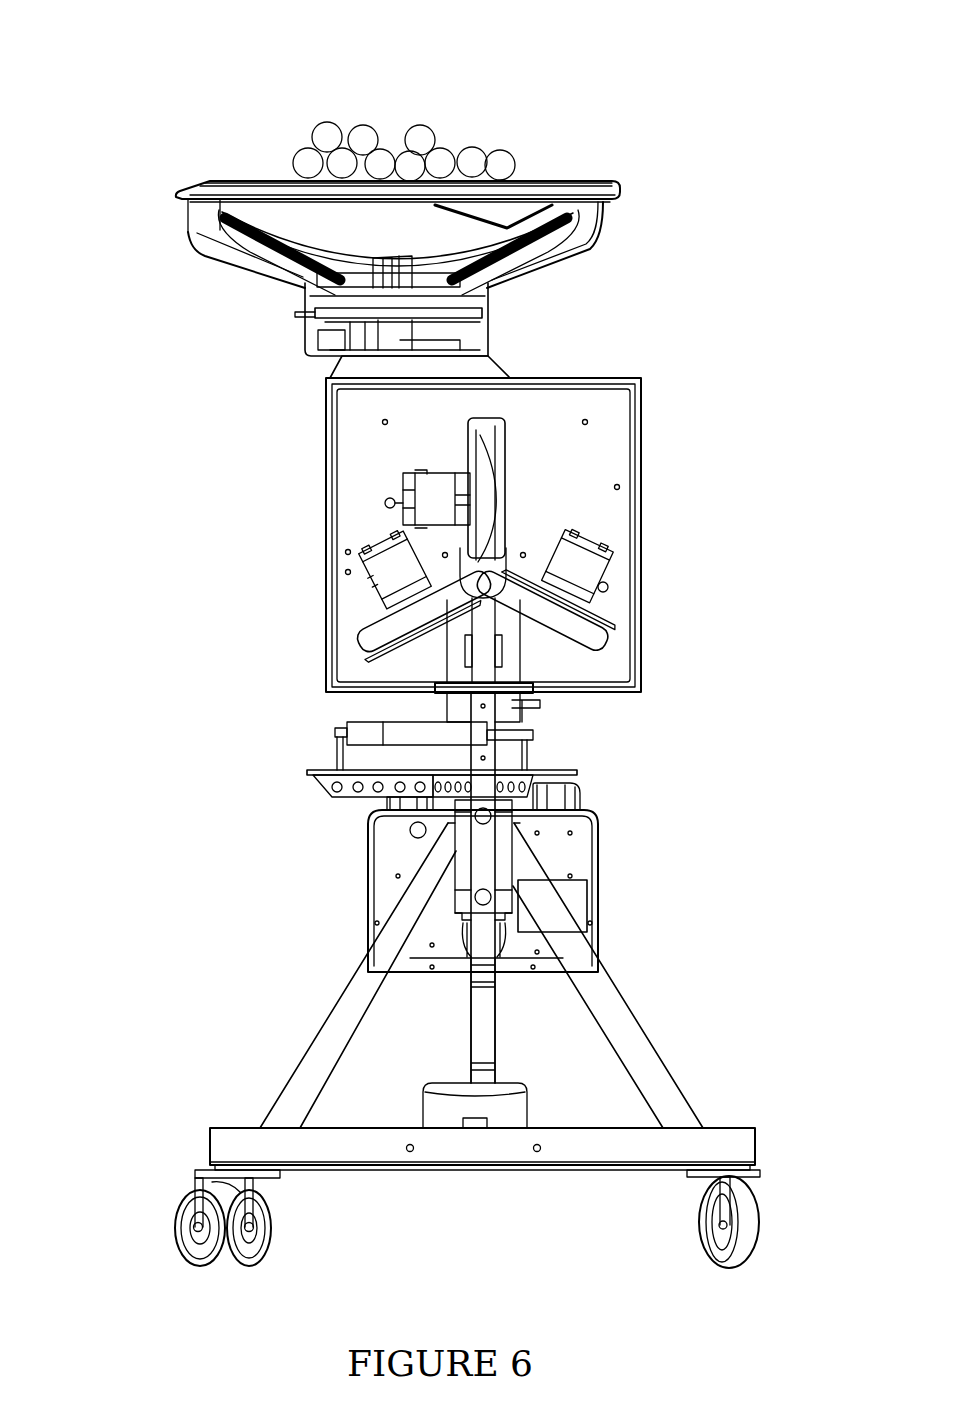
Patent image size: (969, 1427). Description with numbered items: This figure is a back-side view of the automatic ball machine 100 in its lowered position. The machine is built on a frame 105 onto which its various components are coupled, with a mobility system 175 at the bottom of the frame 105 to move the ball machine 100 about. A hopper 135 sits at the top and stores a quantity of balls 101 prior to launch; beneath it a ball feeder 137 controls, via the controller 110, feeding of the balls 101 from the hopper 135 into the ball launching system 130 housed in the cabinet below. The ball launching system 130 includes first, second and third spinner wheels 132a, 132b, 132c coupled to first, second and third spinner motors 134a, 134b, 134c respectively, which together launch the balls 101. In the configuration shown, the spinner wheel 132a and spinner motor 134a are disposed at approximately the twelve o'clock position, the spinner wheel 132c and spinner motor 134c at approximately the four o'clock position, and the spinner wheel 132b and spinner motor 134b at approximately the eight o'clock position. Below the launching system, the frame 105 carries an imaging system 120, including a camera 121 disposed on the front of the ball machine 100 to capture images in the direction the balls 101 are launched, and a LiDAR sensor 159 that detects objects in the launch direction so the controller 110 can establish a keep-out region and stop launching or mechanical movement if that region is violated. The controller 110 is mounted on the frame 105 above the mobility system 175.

The automatic ball machine 100 is at (117, 38).
The balls 101 is at (416, 126).
The frame 105 is at (343, 1166).
The controller 110 is at (597, 857).
The imaging system 120 is at (585, 760).
The camera 121 is at (390, 728).
The ball launching system 130 is at (698, 545).
The first spinner wheel 132a is at (492, 453).
The second spinner wheel 132b is at (388, 650).
The third spinner wheel 132c is at (590, 633).
The first spinner motor 134a is at (385, 501).
The second spinner motor 134b is at (382, 594).
The third spinner motor 134c is at (582, 580).
The hopper 135 is at (538, 105).
The ball feeder 137 is at (483, 333).
The LiDAR sensor 159 is at (318, 720).
The mobility system 175 is at (282, 1237).